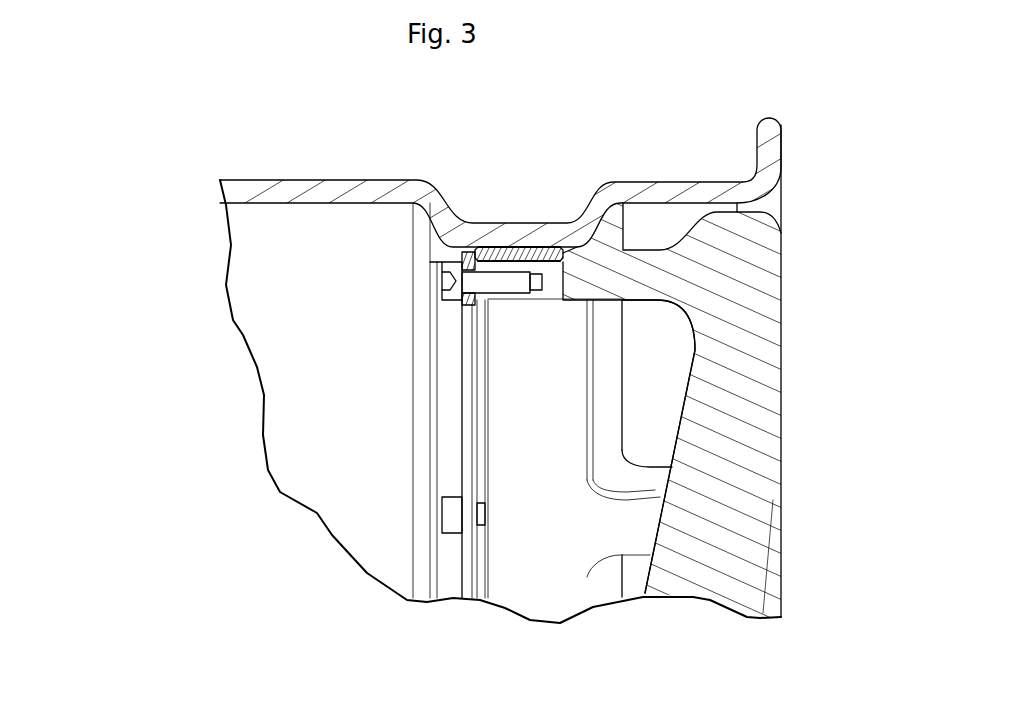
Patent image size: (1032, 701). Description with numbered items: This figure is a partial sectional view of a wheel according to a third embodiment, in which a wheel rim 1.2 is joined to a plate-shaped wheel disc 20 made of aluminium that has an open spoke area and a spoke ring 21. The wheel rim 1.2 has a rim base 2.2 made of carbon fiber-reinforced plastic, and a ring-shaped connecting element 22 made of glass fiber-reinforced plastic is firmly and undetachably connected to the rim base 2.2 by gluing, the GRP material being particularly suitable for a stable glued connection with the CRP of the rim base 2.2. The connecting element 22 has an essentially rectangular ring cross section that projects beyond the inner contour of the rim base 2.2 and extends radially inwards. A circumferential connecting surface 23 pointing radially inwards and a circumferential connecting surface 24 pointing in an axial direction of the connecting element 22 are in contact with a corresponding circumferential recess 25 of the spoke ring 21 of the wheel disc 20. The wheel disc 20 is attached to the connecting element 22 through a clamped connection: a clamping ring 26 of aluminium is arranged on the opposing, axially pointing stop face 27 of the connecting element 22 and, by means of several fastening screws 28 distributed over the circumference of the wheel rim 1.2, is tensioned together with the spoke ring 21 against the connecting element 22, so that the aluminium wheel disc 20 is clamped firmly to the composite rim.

The wheel rim 1.2 is at (798, 112).
The rim base 2.2 is at (298, 179).
The plate-shaped wheel disc 20 is at (717, 407).
The spoke ring 21 is at (540, 432).
The ring-shaped connecting element 22 is at (528, 252).
The connecting surface pointing inwards in a radial direction 23 is at (540, 254).
The connecting surface pointing in an axial direction 24 is at (563, 253).
The recess of spoke ring 25 is at (540, 254).
The clamping ring 26 is at (468, 393).
The stop face pointing in an opposing axial direction 27 is at (462, 254).
The fastening screw 28 is at (443, 281).